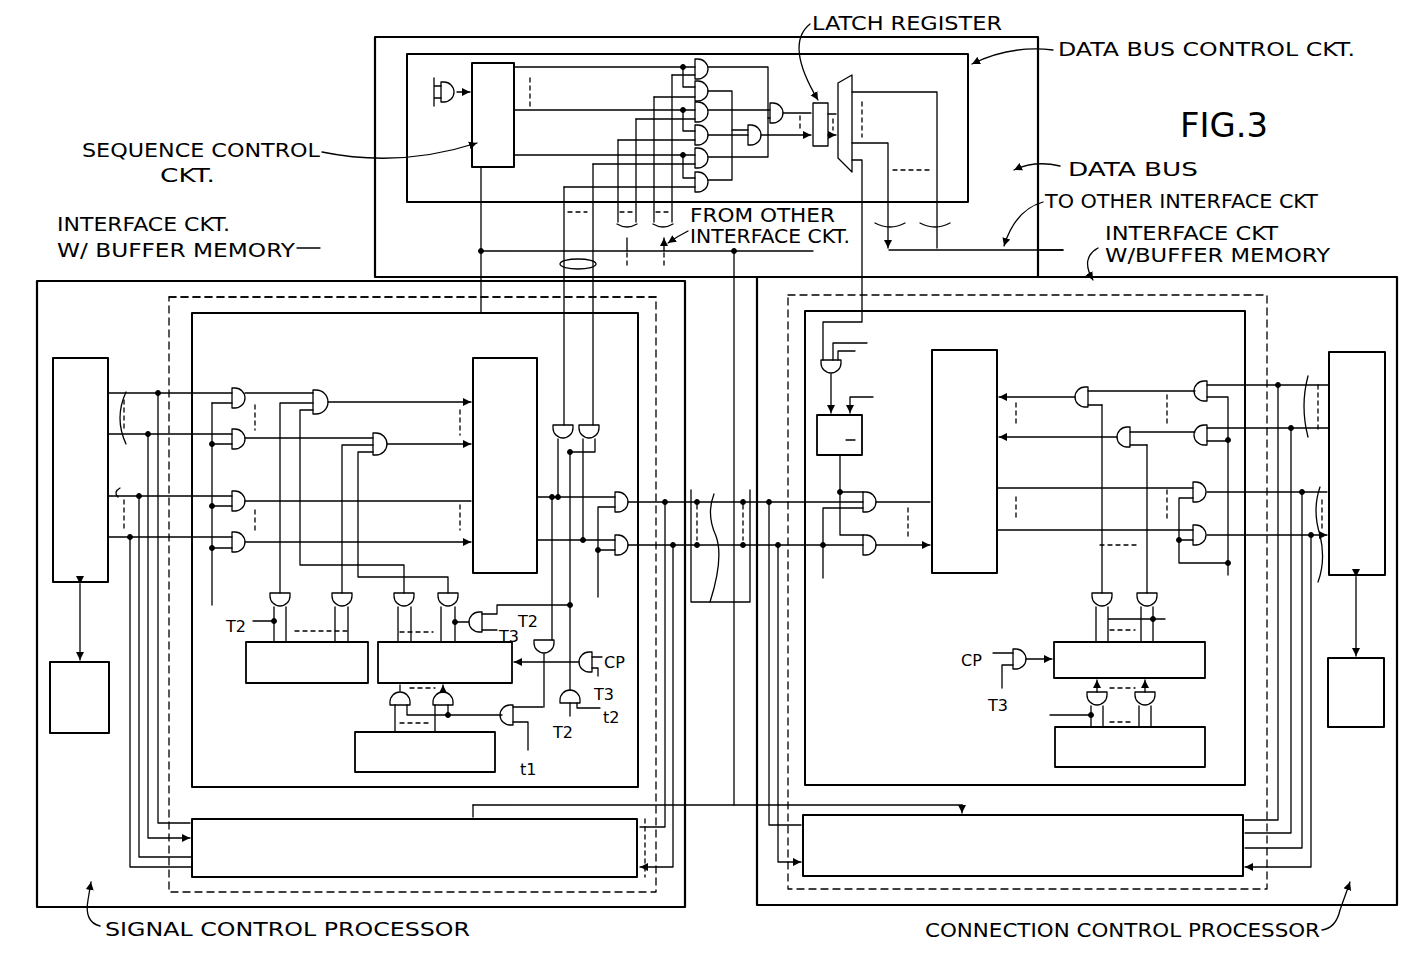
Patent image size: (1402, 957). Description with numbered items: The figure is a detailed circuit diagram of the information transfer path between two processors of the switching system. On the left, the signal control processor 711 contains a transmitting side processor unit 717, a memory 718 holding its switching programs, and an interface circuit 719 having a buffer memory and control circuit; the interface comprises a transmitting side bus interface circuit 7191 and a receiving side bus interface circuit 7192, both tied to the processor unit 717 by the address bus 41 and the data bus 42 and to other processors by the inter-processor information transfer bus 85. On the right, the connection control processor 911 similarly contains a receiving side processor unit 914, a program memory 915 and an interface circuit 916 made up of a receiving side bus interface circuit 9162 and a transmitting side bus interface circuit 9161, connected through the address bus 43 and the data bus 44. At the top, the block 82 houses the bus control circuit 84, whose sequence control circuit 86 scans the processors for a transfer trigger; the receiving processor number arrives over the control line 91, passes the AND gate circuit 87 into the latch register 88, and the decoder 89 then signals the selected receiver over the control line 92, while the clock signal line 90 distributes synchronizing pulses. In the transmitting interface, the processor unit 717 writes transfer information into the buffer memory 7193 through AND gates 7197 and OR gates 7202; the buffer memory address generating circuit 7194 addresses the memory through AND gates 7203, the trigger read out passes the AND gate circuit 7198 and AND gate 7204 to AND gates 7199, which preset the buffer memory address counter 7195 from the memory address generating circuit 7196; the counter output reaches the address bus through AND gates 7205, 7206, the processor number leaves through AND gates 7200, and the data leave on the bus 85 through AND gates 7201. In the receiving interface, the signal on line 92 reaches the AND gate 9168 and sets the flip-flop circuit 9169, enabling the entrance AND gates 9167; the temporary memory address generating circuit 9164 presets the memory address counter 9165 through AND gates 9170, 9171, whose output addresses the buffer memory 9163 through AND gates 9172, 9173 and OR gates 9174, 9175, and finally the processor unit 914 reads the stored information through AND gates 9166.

The address bus 41 is at (118, 392).
The data bus 42 is at (122, 565).
The address bus 43 is at (1309, 378).
The data bus 44 is at (1334, 571).
The data bus control circuit 82 is at (1038, 129).
The bus control circuit 84 is at (940, 104).
The inter-processor information transfer bus 85 is at (745, 563).
The sequence control circuit 86 is at (478, 170).
The AND gate circuit 87 is at (702, 62).
The latch register 88 is at (820, 138).
The decoder 89 is at (844, 150).
The clock signal line 90 is at (483, 222).
The control line 91 is at (565, 262).
The control line 92 is at (862, 252).
The processor 711 is at (130, 293).
The processor unit 717 is at (77, 357).
The memory 718 is at (66, 735).
The interface circuit 719 is at (300, 289).
The processor 911 is at (1352, 278).
The processor unit 914 is at (1350, 352).
The memory 915 is at (1350, 730).
The interface circuit 916 is at (1268, 352).
The transmitting side bus interface circuit 7191 is at (207, 305).
The receiving side bus interface circuit 7192 is at (253, 819).
The buffer memory 7193 is at (492, 360).
The buffer memory address generating circuit 7194 is at (246, 644).
The buffer memory address counter 7195 is at (378, 684).
The memory address generating circuit 7196 is at (355, 750).
The AND gates 7197 is at (241, 389).
The AND gate circuit 7198 is at (556, 650).
The AND gates 7199 is at (388, 698).
The AND gates 7200 is at (586, 425).
The AND gates 7201 is at (620, 493).
The OR gates 7202 is at (330, 391).
The AND gates 7203 is at (272, 594).
The AND gate 7204 is at (490, 790).
The AND gates 7205 is at (398, 606).
The AND gates 7206 is at (446, 592).
The transmitting side bus interface circuit 9161 is at (1043, 822).
The receiving side bus interface circuit 9162 is at (1248, 315).
The buffer memory 9163 is at (997, 363).
The temporary memory address generating circuit 9164 is at (1055, 752).
The memory address counter 9165 is at (1055, 641).
The AND gates 9166 is at (1199, 380).
The AND gates 9167 is at (880, 556).
The AND gate 9168 is at (842, 367).
The flip-flop circuit 9169 is at (862, 428).
The AND gates 9170 is at (1087, 698).
The AND gates 9171 is at (1157, 700).
The AND gates 9172 is at (1092, 597).
The AND gates 9173 is at (1155, 600).
The OR gates 9174 is at (1083, 388).
The OR gates 9175 is at (1118, 440).